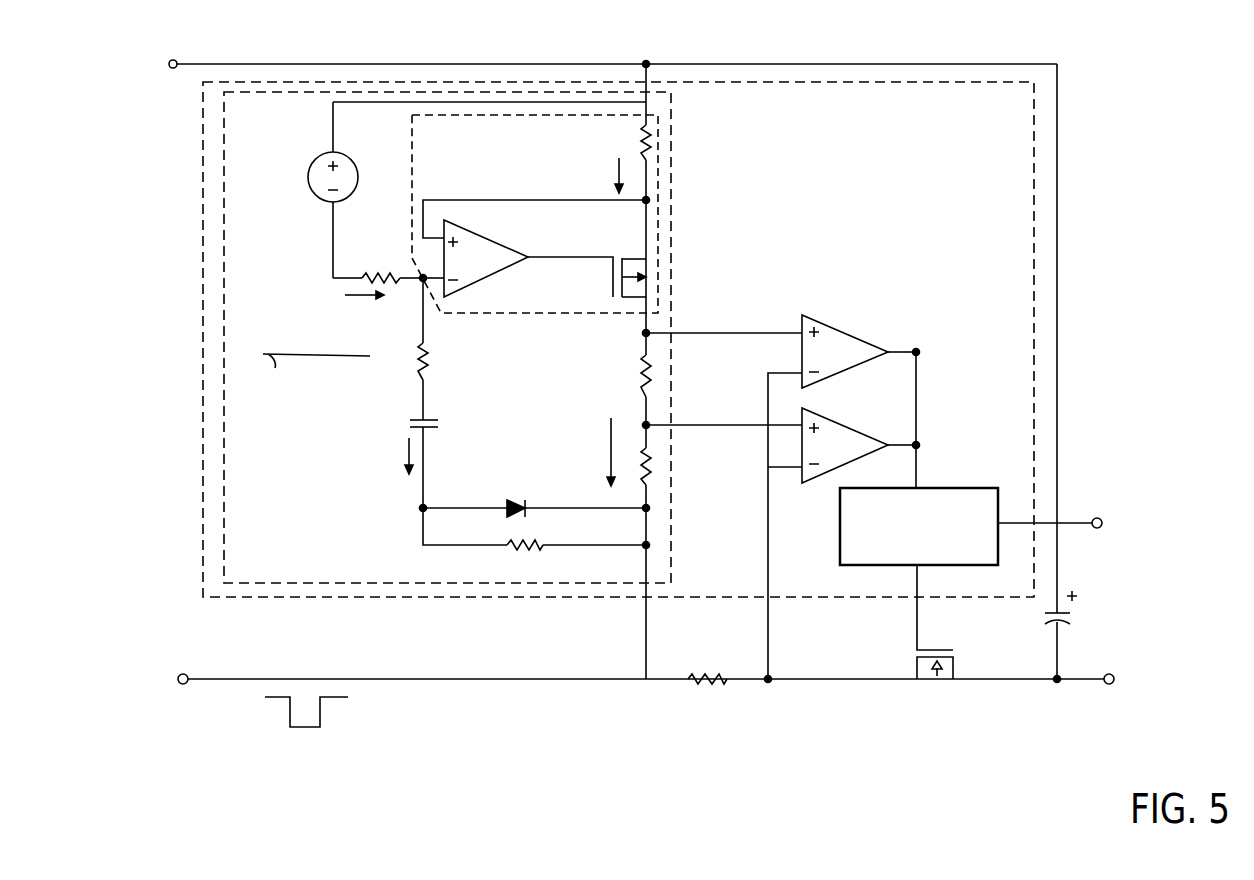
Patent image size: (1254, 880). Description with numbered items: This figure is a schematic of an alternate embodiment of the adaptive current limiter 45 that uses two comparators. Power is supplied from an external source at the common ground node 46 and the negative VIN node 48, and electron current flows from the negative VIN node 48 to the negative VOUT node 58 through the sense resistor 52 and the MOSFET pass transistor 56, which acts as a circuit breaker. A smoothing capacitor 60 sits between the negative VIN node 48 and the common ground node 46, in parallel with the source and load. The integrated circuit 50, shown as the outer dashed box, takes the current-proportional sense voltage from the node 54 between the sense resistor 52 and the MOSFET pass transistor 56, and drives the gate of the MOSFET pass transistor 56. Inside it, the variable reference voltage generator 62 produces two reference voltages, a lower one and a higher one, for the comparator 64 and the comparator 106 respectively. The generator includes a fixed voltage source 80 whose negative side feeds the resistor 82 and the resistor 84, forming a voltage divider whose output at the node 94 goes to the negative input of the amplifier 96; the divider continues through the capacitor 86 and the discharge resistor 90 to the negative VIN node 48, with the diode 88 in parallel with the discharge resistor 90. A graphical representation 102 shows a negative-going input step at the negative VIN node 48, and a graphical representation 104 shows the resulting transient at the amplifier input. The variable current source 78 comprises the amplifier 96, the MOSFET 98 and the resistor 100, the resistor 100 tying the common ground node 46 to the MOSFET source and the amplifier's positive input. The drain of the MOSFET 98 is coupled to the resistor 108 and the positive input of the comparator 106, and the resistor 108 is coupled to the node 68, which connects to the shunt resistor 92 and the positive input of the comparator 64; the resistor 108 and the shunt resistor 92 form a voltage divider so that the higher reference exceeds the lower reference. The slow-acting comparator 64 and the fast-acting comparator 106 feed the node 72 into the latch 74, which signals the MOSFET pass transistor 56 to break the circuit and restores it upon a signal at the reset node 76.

The adaptive current limiter 45 is at (1164, 106).
The common ground node 46 is at (172, 58).
The negative VIN node 48 is at (178, 688).
The integrated circuit 50 is at (203, 495).
The sense resistor 52 is at (692, 685).
The node 54 is at (767, 680).
The MOSFET pass transistor 56 is at (935, 683).
The negative VOUT node 58 is at (1101, 688).
The smoothing capacitor 60 is at (1076, 613).
The variable reference voltage generator 62 is at (672, 205).
The comparator 64 is at (848, 424).
The node 68 is at (650, 422).
The node 72 is at (920, 440).
The application-specific latch 74 is at (963, 487).
The reset node 76 is at (1104, 523).
The variable current source 78 is at (517, 316).
The fixed voltage source 80 is at (357, 167).
The resistor 82 is at (365, 272).
The resistor 84 is at (430, 366).
The capacitor 86 is at (410, 426).
The diode 88 is at (524, 497).
The discharge resistor 90 is at (505, 548).
The shunt resistor 92 is at (650, 480).
The node 94 is at (421, 287).
The amplifier 96 is at (487, 239).
The MOSFET 98 is at (612, 277).
The resistor 100 is at (633, 140).
The graphical representation 102 is at (282, 712).
The graphical representation 104 is at (297, 363).
The comparator 106 is at (848, 330).
The resistor 108 is at (641, 374).